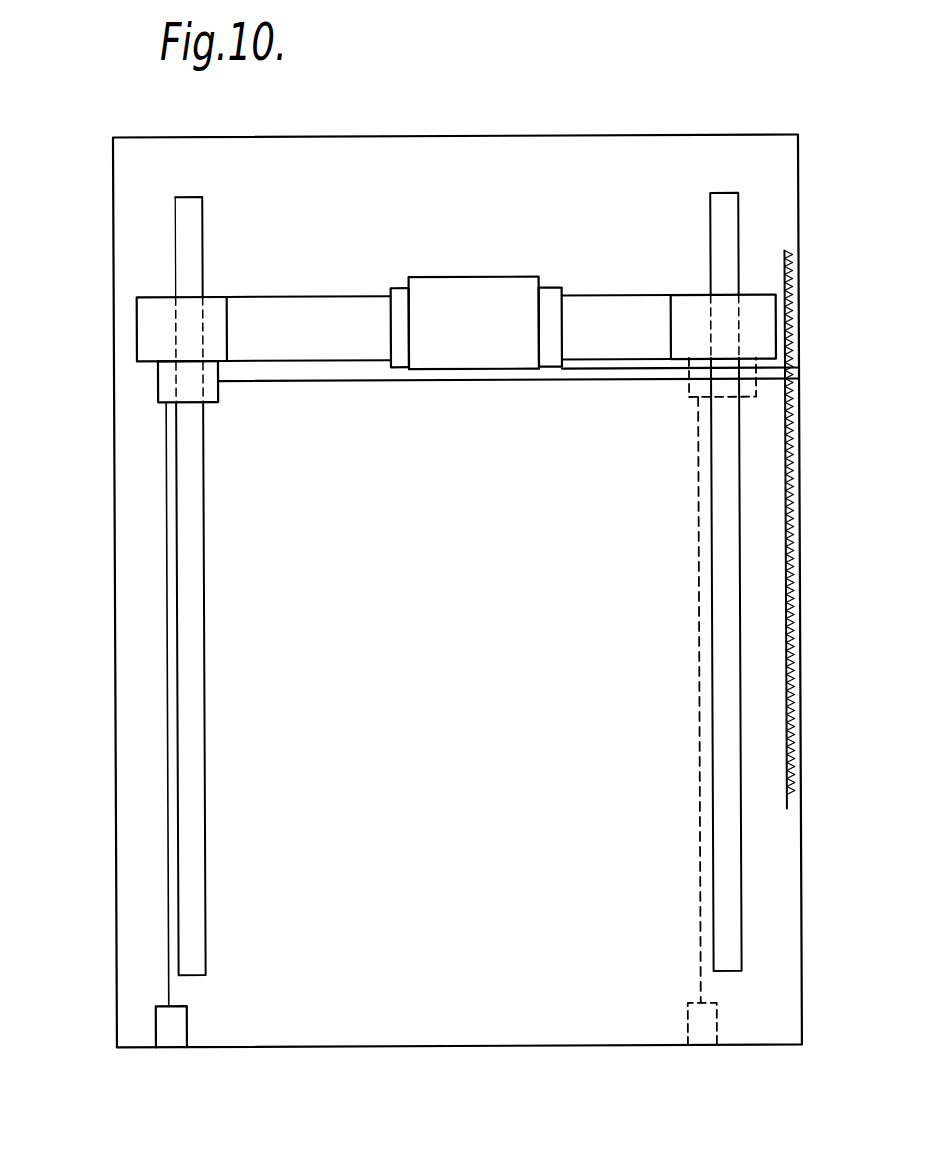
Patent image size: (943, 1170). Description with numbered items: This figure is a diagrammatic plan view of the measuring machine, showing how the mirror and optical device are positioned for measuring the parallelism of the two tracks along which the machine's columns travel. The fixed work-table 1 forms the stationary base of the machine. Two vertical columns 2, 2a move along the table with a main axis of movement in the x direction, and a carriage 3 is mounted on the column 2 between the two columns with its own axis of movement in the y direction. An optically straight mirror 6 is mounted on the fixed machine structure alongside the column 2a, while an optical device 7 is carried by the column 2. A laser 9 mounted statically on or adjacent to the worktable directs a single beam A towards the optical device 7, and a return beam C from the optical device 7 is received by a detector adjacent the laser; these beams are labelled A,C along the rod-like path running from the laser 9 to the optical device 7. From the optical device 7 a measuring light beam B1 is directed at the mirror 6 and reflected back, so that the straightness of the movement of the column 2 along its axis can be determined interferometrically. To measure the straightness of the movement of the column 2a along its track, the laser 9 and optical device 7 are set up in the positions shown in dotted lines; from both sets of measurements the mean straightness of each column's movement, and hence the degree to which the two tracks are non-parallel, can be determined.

The work-table 1 is at (558, 1040).
The vertical column 2 is at (221, 300).
The vertical column 2a is at (690, 297).
The carriage 3 is at (496, 277).
The mirror 6 is at (794, 618).
The optical device 7 is at (165, 377).
The laser 9 is at (173, 1035).
The light beam B1 is at (368, 381).
The beam and return beam A,C is at (167, 762).